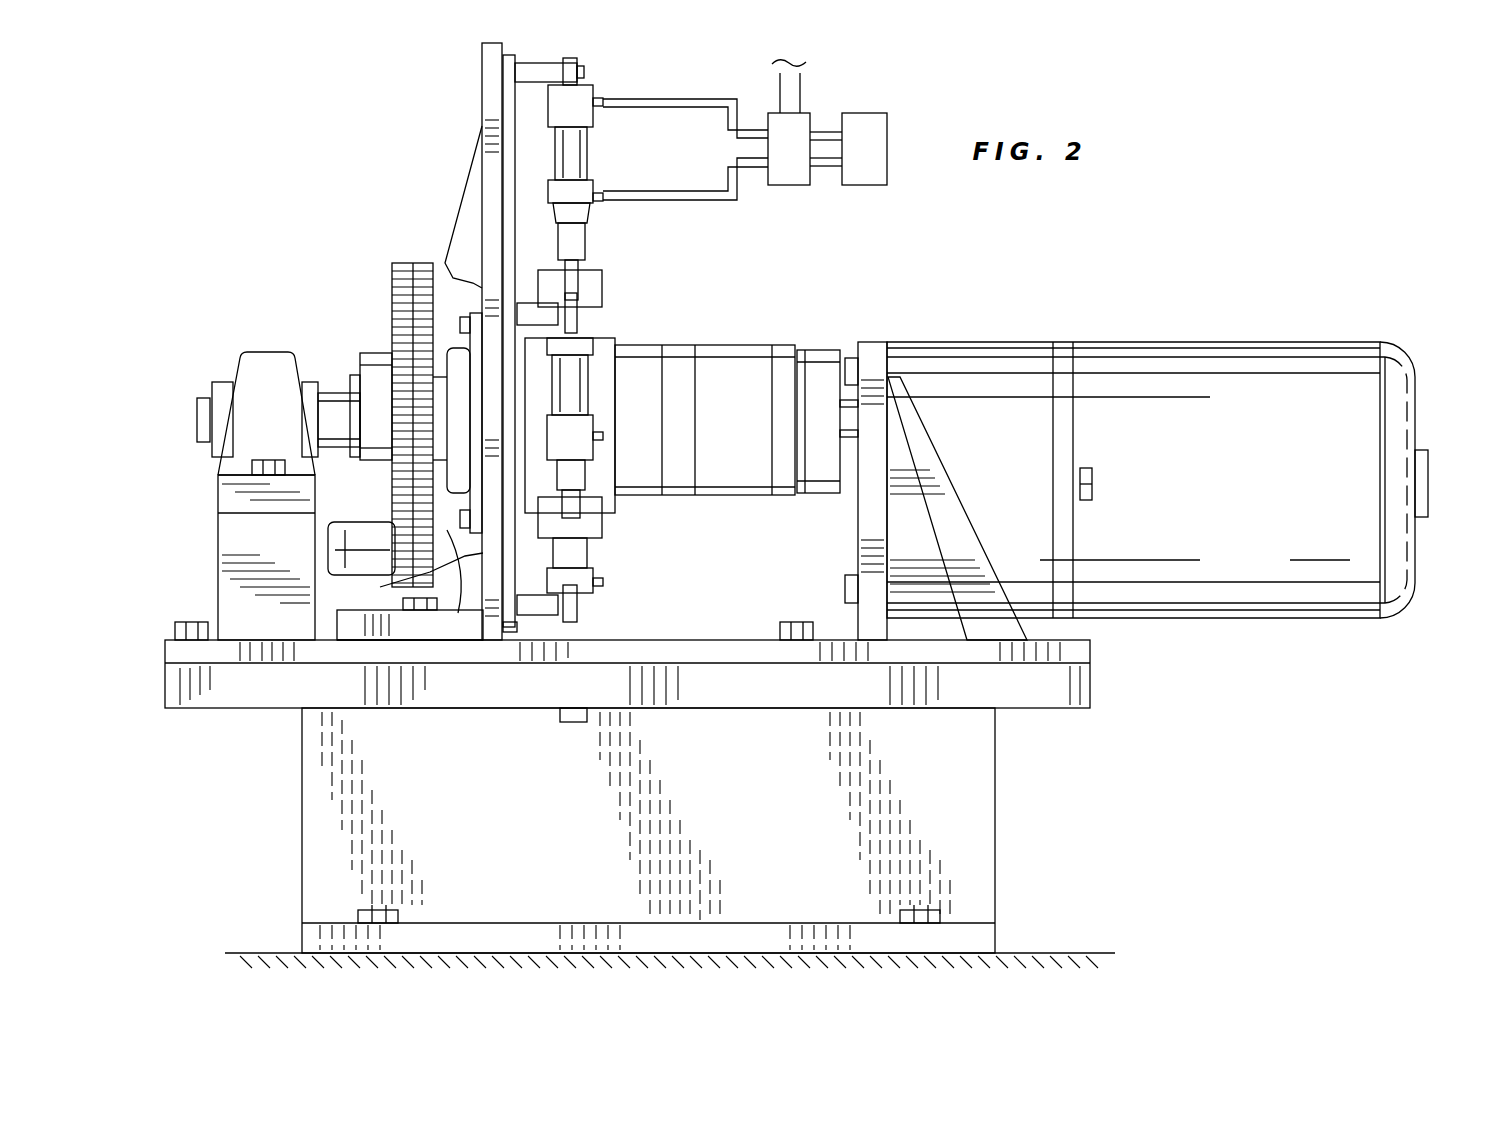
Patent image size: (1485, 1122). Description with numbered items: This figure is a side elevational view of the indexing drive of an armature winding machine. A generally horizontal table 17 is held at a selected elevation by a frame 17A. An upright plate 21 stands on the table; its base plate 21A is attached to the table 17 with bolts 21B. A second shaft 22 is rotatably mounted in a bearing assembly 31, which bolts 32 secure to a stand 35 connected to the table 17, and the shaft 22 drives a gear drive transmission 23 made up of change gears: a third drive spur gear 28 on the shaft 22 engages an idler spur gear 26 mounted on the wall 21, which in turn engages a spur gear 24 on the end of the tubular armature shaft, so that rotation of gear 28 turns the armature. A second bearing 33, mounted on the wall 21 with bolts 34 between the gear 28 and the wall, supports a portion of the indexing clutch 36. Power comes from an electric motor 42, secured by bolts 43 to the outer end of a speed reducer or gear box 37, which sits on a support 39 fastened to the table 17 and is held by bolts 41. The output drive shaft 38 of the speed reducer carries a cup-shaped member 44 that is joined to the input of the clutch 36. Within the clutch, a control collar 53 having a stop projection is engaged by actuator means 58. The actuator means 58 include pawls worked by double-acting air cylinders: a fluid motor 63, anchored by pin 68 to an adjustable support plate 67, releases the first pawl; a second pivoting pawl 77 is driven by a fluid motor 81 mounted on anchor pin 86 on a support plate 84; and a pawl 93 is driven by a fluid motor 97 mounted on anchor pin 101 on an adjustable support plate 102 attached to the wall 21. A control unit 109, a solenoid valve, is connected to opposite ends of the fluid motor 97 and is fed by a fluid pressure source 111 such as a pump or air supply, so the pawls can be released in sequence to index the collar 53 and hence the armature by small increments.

The table 17 is at (1090, 648).
The frame 17A is at (958, 787).
The upright plate 21 is at (482, 70).
The base plate 21A is at (352, 630).
The bolts 21B is at (418, 608).
The second shaft 22 is at (322, 398).
The gear drive transmission 23 is at (378, 248).
The spur gear 24 is at (395, 552).
The idler spur gear 26 is at (392, 283).
The third drive spur gear 28 is at (415, 300).
The bearing assembly 31 is at (268, 358).
The bolts 32 is at (270, 460).
The second bearing 33 is at (482, 288).
The bolts 34 is at (418, 606).
The stand 35 is at (232, 592).
The indexing clutch 36 is at (694, 332).
The speed reducer 37 is at (990, 370).
The output drive shaft 38 is at (853, 437).
The support 39 is at (875, 340).
The bolts 41 is at (848, 370).
The electric motor 42 is at (1343, 360).
The bolts 43 is at (1095, 482).
The cup-shaped member 44 is at (820, 388).
The control collar 53 is at (607, 460).
The actuator means 58 is at (650, 178).
The fluid motor 63 is at (583, 556).
The adjustable support plate 67 is at (507, 642).
The anchor pin 68 is at (593, 605).
The second pivoting pawl 77 is at (590, 528).
The fluid motor 81 is at (580, 390).
The support plate 84 is at (510, 272).
The anchor pin 86 is at (585, 312).
The pawl 93 is at (592, 292).
The fluid motor 97 is at (585, 143).
The anchor pin 101 is at (582, 72).
The adjustable support plate 102 is at (503, 110).
The control unit 109 is at (800, 125).
The fluid pressure source 111 is at (877, 128).